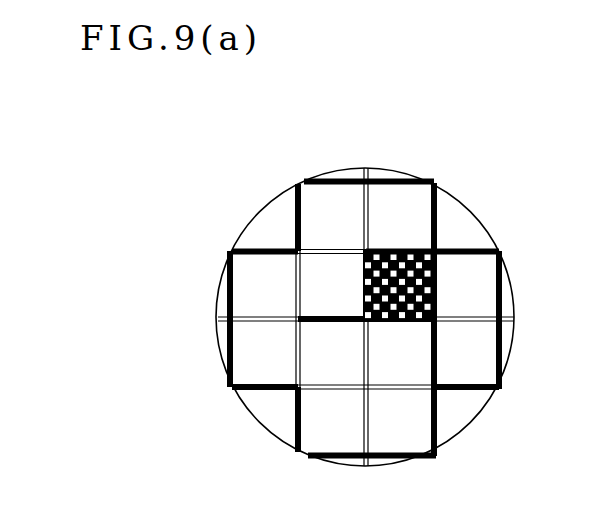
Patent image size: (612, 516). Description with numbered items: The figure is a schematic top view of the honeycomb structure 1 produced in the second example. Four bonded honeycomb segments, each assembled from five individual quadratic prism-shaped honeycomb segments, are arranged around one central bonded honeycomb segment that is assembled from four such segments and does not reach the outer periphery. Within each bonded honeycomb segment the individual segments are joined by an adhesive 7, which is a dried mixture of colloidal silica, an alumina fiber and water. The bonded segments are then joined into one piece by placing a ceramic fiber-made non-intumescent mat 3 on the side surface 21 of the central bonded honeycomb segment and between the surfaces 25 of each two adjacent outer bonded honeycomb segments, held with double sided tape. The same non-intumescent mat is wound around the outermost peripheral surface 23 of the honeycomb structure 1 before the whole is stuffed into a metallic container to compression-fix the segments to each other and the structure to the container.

The honeycomb structure 1 is at (393, 145).
The adhesive 7 is at (486, 249).
The ceramic fiber-made non-intumescent mat 3 is at (508, 322).
The side surface 21 is at (306, 354).
The outermost peripheral surface 23 is at (467, 417).
The surface 25 is at (368, 430).